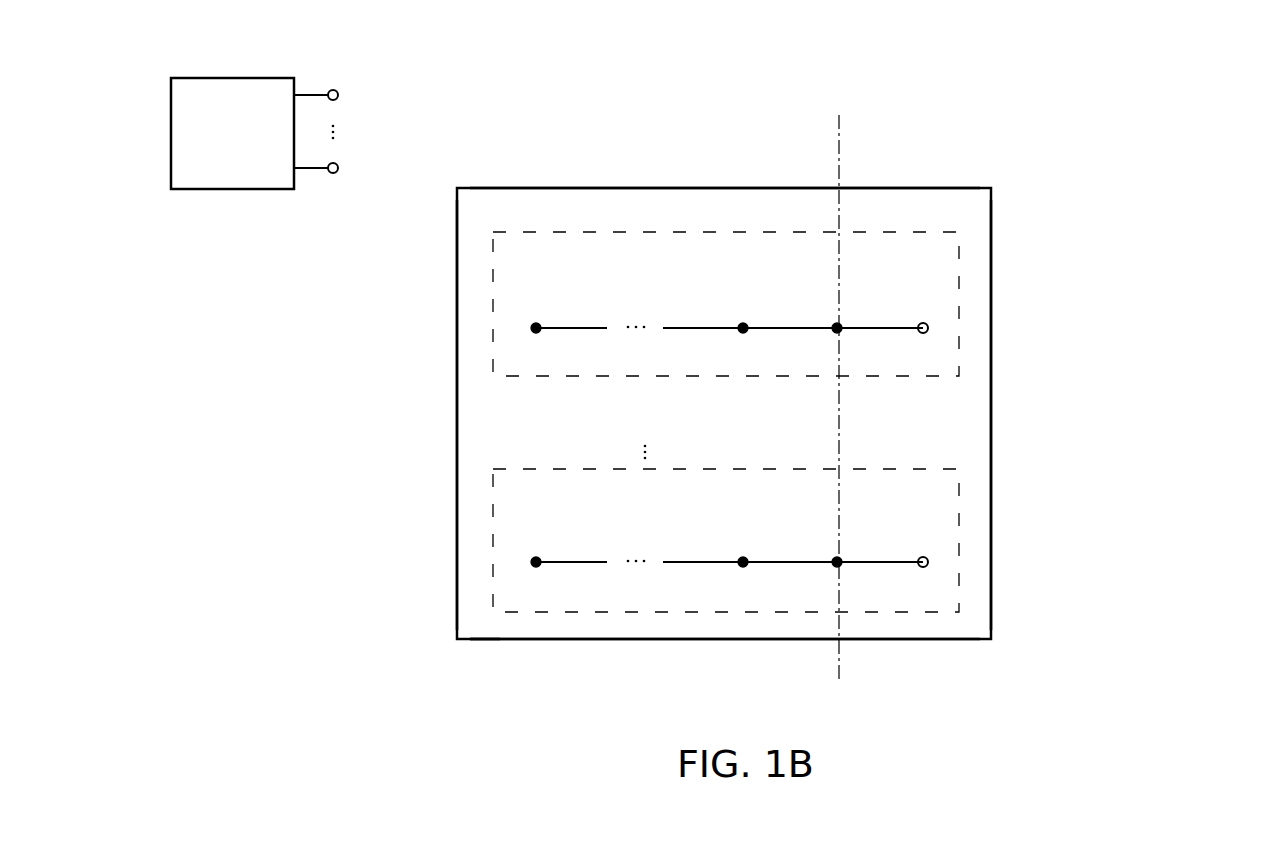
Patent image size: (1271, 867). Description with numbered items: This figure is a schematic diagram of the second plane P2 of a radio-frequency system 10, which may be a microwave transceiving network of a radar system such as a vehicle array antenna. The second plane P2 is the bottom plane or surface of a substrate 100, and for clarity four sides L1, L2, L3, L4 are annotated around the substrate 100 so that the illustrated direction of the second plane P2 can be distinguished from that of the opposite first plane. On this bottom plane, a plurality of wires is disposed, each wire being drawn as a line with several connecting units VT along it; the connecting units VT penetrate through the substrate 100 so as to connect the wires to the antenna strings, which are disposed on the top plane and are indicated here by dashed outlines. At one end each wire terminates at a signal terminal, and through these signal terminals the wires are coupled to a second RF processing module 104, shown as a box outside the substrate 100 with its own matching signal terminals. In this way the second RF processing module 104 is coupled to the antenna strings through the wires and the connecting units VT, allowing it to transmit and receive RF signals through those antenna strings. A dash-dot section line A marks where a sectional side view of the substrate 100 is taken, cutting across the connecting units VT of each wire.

The radio-frequency (RF) system 10 is at (1158, 76).
The substrate 100 is at (953, 188).
The second RF processing module 104 is at (278, 78).
The connecting units VT is at (699, 430).
The side L1 is at (1009, 415).
The side L2 is at (725, 660).
The side L3 is at (437, 415).
The side L4 is at (725, 172).
The second plane P2 is at (475, 614).
The line A-A' A is at (841, 115).